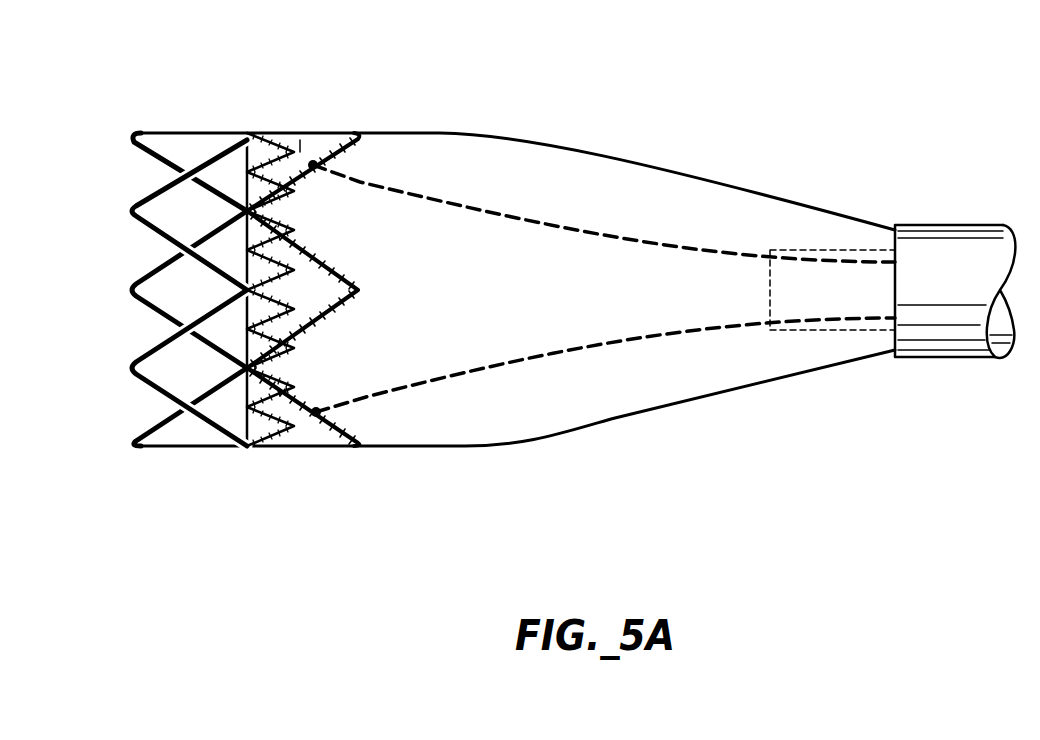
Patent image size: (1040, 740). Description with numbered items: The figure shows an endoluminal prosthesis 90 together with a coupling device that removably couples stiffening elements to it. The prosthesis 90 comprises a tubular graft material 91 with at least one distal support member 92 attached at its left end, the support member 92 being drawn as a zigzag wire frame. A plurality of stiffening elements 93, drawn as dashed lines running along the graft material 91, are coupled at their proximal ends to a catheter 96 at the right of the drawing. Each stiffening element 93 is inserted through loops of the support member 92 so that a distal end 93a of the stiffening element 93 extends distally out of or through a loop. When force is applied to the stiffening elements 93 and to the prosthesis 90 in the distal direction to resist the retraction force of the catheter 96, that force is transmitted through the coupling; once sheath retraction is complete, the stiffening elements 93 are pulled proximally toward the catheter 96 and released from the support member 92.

The prosthesis 90 is at (390, 85).
The tubular graft material 91 is at (425, 133).
The distal support member 92 is at (252, 133).
The stiffening elements 93 is at (512, 220).
The distal end of stiffening element 93a is at (290, 130).
The catheter 96 is at (945, 223).